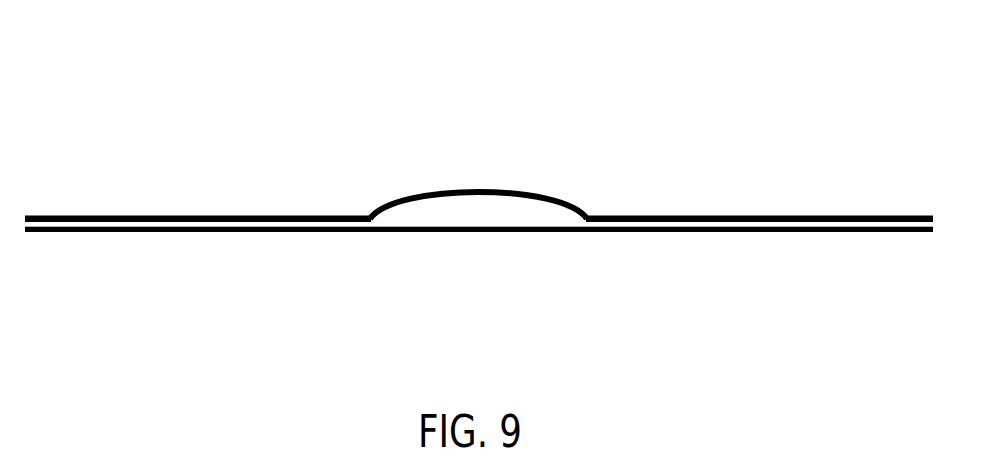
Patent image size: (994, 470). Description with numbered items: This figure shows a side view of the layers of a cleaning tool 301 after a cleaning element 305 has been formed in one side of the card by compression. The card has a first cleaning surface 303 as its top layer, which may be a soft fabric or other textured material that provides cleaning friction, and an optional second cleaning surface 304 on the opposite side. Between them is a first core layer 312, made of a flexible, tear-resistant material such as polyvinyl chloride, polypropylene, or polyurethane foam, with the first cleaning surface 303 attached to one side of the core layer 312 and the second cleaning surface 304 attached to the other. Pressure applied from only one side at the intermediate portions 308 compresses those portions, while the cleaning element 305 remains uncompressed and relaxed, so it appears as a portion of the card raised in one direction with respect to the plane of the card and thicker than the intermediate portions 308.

The cleaning tool 301 is at (182, 75).
The first cleaning surface 303 is at (479, 137).
The second cleaning surface 304 is at (107, 232).
The cleaning element 305 is at (465, 197).
The intermediate portion 308 is at (243, 212).
The first core layer 312 is at (320, 225).